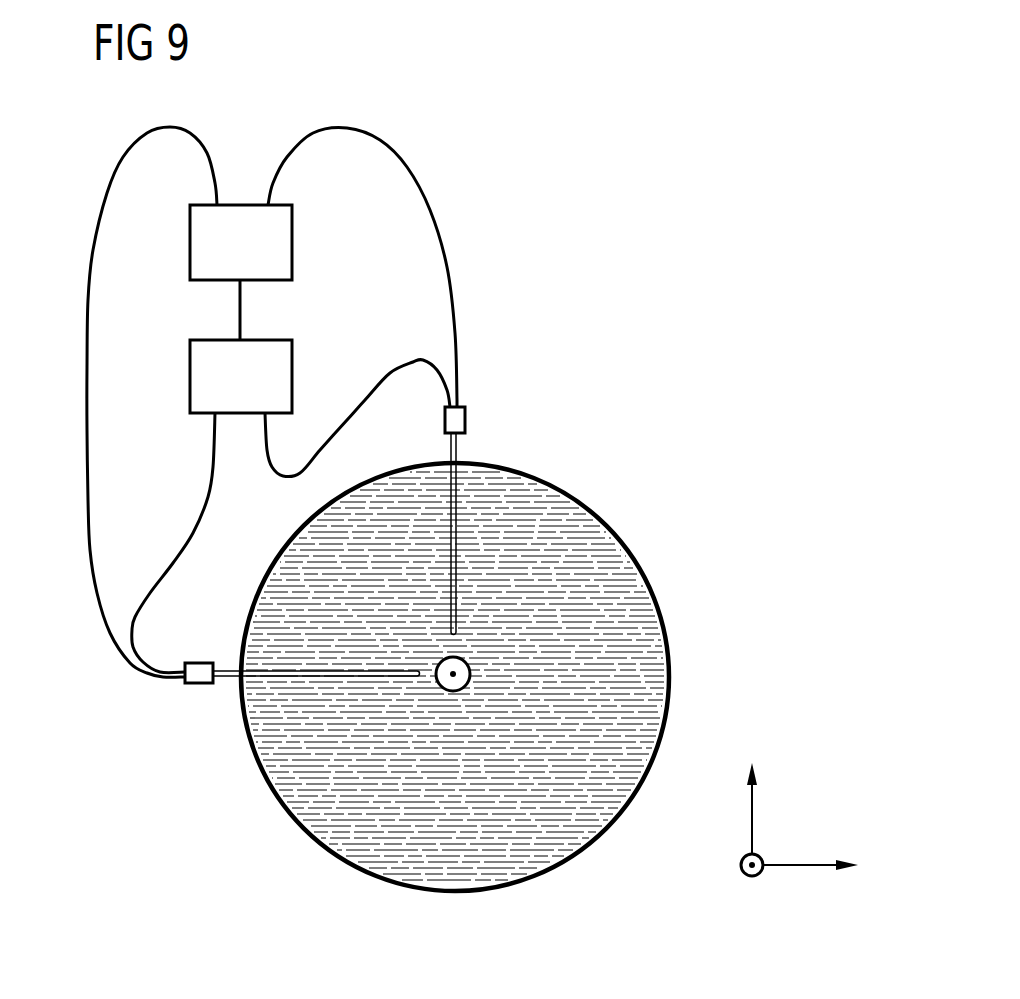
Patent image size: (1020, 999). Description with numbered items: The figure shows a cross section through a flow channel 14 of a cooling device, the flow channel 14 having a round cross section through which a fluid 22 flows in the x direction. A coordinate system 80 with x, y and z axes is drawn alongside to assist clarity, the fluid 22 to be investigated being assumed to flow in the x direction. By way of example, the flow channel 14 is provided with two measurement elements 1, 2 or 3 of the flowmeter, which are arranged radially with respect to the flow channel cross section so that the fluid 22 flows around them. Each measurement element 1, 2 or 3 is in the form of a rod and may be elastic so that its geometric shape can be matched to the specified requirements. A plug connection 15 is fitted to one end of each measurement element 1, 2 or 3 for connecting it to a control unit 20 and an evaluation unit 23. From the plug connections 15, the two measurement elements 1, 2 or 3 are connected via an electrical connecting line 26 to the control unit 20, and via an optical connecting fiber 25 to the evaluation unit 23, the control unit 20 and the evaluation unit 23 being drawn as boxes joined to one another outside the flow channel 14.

The measurement element 1 is at (387, 623).
The measurement element 2 is at (334, 554).
The measurement element 3 is at (453, 547).
The flow channel 14 is at (625, 552).
The plug connection 15 is at (465, 420).
The control unit 20 is at (190, 377).
The fluid 22 is at (471, 674).
The evaluation unit 23 is at (190, 243).
The optical connecting fiber 25 is at (442, 267).
The electrical connecting line 26 is at (282, 478).
The coordinate system 80 is at (815, 803).